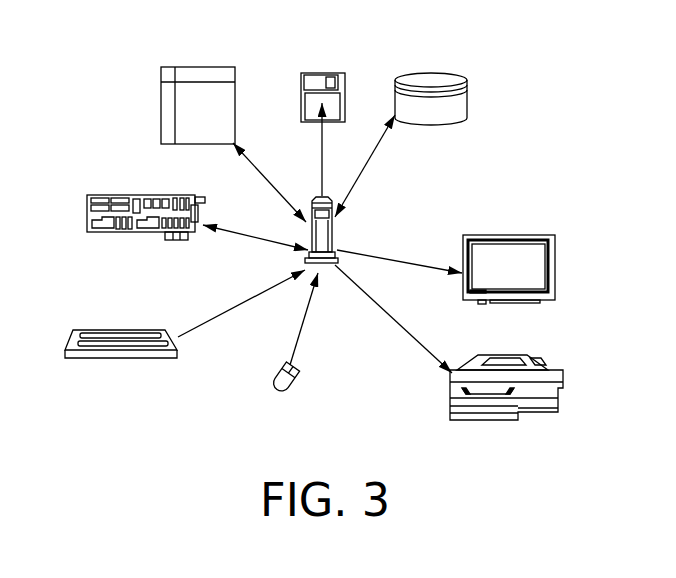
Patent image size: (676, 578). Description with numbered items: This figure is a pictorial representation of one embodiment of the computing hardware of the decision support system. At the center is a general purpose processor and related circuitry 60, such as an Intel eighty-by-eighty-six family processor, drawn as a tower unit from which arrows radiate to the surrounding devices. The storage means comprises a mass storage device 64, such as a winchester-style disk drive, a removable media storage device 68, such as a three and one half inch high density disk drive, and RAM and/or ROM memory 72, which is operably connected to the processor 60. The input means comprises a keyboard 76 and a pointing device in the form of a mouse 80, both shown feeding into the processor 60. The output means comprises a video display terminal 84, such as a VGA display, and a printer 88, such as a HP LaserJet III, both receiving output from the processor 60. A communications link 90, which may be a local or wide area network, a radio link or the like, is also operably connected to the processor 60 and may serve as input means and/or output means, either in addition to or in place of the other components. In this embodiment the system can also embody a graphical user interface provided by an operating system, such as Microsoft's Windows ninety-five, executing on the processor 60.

The general purpose processor and related circuitry 60 is at (337, 238).
The mass storage device 64 is at (466, 88).
The removable media storage device 68 is at (316, 73).
The RAM and/or ROM memory 72 is at (198, 67).
The keyboard 76 is at (90, 358).
The mouse 80 is at (284, 394).
The video display terminal 84 is at (556, 270).
The printer 88 is at (563, 396).
The communications link 90 is at (118, 195).